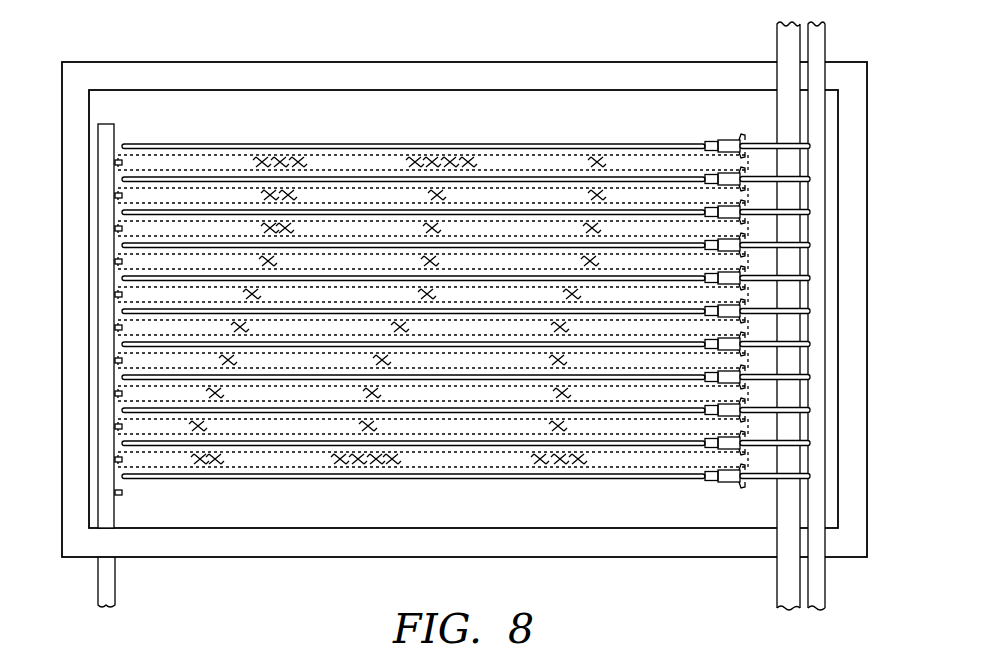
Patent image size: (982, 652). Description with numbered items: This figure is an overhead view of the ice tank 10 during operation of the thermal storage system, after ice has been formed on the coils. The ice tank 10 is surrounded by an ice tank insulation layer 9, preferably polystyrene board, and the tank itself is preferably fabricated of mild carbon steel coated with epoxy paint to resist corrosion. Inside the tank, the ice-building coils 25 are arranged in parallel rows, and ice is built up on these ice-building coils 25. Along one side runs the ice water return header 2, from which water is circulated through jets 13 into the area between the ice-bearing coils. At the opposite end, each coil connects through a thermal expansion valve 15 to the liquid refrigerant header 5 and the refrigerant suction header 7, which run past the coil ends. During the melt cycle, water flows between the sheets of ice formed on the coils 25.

The ice water return header 2 is at (103, 293).
The liquid refrigerant header 5 is at (827, 40).
The refrigerant suction header 7 is at (777, 40).
The ice tank insulation layer 9 is at (223, 76).
The ice tank 10 is at (556, 46).
The jets 13 is at (123, 196).
The thermal expansion valves 15 is at (703, 145).
The ice-building coils 25 is at (510, 173).